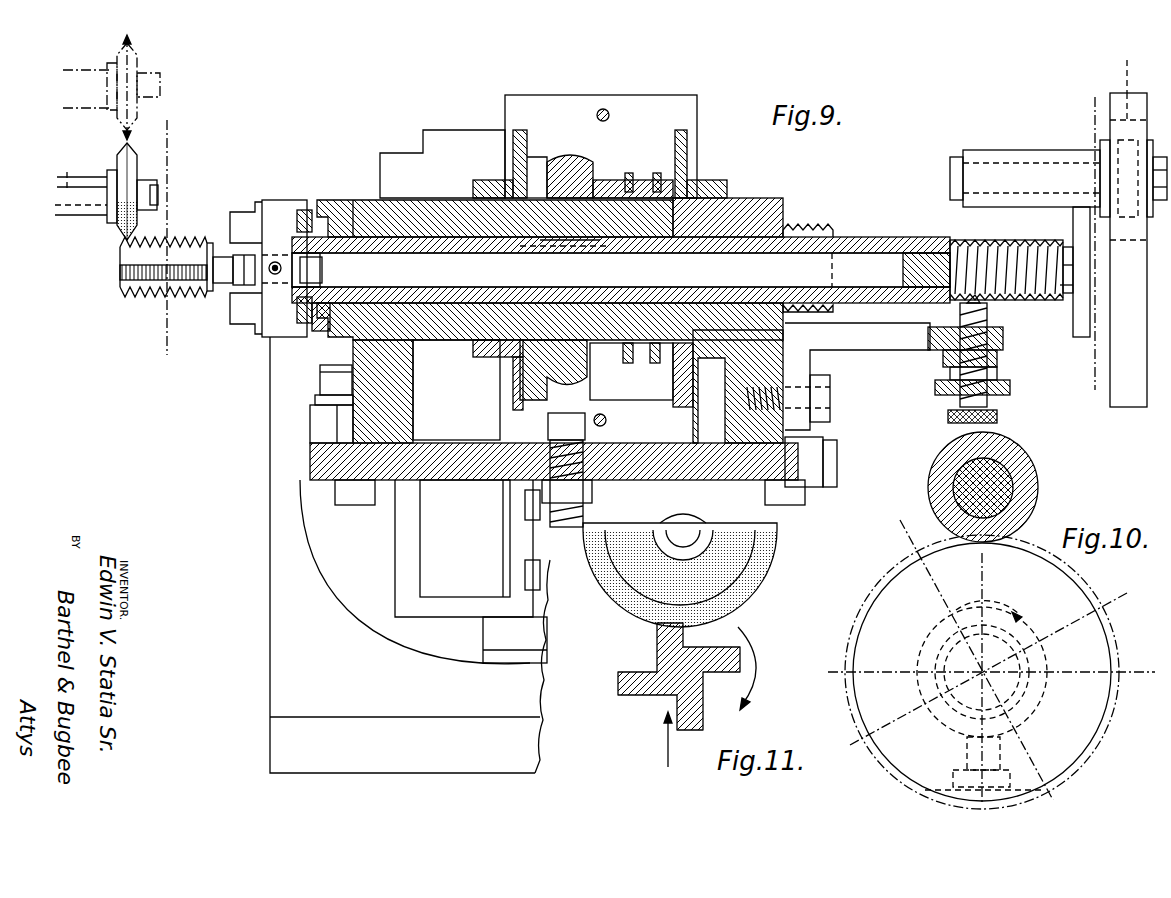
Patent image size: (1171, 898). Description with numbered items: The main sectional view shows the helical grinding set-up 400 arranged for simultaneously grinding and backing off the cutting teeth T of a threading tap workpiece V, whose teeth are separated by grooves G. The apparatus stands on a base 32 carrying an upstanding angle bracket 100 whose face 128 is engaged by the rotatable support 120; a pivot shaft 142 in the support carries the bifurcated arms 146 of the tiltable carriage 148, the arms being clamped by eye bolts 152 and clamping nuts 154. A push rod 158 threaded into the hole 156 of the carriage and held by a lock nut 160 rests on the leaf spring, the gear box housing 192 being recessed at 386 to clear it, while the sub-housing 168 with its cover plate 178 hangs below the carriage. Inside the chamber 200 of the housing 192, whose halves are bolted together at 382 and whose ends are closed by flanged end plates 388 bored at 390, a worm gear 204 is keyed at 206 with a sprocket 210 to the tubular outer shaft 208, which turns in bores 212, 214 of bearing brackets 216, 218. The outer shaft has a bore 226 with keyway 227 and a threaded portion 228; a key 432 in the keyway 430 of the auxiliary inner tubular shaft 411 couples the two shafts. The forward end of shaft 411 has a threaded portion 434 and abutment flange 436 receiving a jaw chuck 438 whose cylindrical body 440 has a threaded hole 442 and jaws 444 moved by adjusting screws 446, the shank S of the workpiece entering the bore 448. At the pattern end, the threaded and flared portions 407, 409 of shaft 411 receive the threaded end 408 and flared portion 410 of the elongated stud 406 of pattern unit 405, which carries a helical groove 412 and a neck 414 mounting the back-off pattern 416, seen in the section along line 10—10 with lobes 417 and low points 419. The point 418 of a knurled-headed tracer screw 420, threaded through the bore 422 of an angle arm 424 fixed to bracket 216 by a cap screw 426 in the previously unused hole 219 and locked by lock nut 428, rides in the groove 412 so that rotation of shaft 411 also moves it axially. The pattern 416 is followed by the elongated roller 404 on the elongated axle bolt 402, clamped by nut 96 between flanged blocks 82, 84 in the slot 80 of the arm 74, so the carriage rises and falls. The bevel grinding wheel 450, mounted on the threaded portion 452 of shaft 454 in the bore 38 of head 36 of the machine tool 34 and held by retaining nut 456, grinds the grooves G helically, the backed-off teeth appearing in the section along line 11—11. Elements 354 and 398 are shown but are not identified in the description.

In FIG. 9, the section line 11 is at (172, 147).
In FIG. 9, the section line 10 is at (1095, 97).
In FIG. 9, the bevel grinding wheel 450 is at (120, 152).
In FIG. 11, the bevel grinding wheel 450 is at (760, 570).
In FIG. 9, the reduced diameter partially threaded portion 452 is at (140, 192).
In FIG. 11, the reduced diameter partially threaded portion 452 is at (700, 522).
In FIG. 9, the retaining nut 456 is at (138, 205).
In FIG. 11, the retaining nut 456 is at (715, 535).
In FIG. 9, the shaft 454 is at (68, 175).
In FIG. 9, the machine tool 34 is at (48, 208).
In FIG. 9, the head 36 is at (58, 224).
In FIG. 9, the bore 38 is at (82, 218).
In FIG. 9, the workpiece V is at (126, 262).
In FIG. 11, the workpiece V is at (675, 663).
In FIG. 9, the cutting teeth T is at (123, 290).
In FIG. 11, the cutting teeth T is at (630, 688).
In FIG. 9, the grooves G is at (150, 300).
In FIG. 11, the grooves G is at (640, 697).
In FIG. 9, the shank S is at (218, 243).
In FIG. 9, the jaws 444 is at (250, 212).
In FIG. 9, the work-holding chuck 438 is at (282, 196).
In FIG. 9, the cylindrical body 440 is at (261, 203).
In FIG. 9, the central threaded hole 442 is at (300, 210).
In FIG. 9, the headless adjusting screws 446 is at (272, 276).
In FIG. 9, the abutment flange 436 is at (320, 332).
In FIG. 9, the threaded portion 434 is at (332, 378).
In FIG. 9, the clamping nuts 154 is at (318, 400).
In FIG. 9, the bifurcated arms 146 is at (320, 420).
In FIG. 9, the tubular outer shaft 208 is at (377, 198).
In FIG. 9, the bore 214 is at (445, 235).
In FIG. 9, the keyway 227 is at (412, 235).
In FIG. 9, the bore 448 is at (388, 252).
In FIG. 9, the bore 226 is at (735, 300).
In FIG. 9, the central keyway 430 is at (538, 250).
In FIG. 9, the key 432 is at (588, 250).
In FIG. 9, the bore 212 is at (730, 198).
In FIG. 9, the bearing bracket 216 is at (770, 206).
In FIG. 9, the threaded portion 228 is at (806, 222).
In FIG. 9, the auxiliary inner tubular shaft 411 is at (858, 238).
In FIG. 9, the threaded end 408 is at (903, 270).
In FIG. 9, the threaded portion 407 is at (905, 302).
In FIG. 9, the flared portion 409 is at (938, 303).
In FIG. 9, the flared portion 410 is at (948, 243).
In FIG. 9, the gear box housing 192 is at (690, 105).
In FIG. 9, the helical grinding set-up 400 is at (453, 166).
In FIG. 9, the flanged end plates 388 is at (513, 150).
In FIG. 9, the bores 390 is at (480, 196).
In FIG. 9, the chamber 200 is at (538, 150).
In FIG. 9, the worm gear 204 is at (578, 158).
In FIG. 9, the sprocket 210 is at (632, 173).
In FIG. 9, the key 206 is at (633, 188).
In FIG. 9, the dowel 354 is at (660, 172).
In FIG. 9, the cover plate 398 is at (687, 142).
In FIG. 9, the bolts 382 is at (603, 109).
In FIG. 9, the bearing bracket 218 is at (416, 344).
In FIG. 9, the recess 386 is at (583, 400).
In FIG. 9, the horizontal threaded hole 219 is at (742, 405).
In FIG. 9, the threaded vertical hole 156 is at (588, 442).
In FIG. 9, the lock nut 160 is at (592, 491).
In FIG. 9, the push rod 158 is at (586, 509).
In FIG. 9, the tiltable carriage 148 is at (326, 462).
In FIG. 9, the pivot shaft 142 is at (830, 478).
In FIG. 9, the eye bolts 152 is at (358, 506).
In FIG. 9, the rotatable support 120 is at (432, 614).
In FIG. 9, the sub-housing 168 is at (434, 552).
In FIG. 9, the cover plate 178 is at (520, 598).
In FIG. 9, the face 128 is at (360, 594).
In FIG. 9, the angle bracket 100 is at (283, 665).
In FIG. 9, the base 32 is at (283, 738).
In FIG. 9, the angle arm 424 is at (883, 350).
In FIG. 10, the angle arm 424 is at (925, 790).
In FIG. 9, the cap screw 426 is at (830, 395).
In FIG. 9, the threaded bore 422 is at (1000, 340).
In FIG. 9, the point 418 is at (986, 306).
In FIG. 10, the point 418 is at (950, 735).
In FIG. 9, the lock nut 428 is at (936, 392).
In FIG. 9, the tracer screw 420 is at (990, 416).
In FIG. 10, the tracer screw 420 is at (955, 770).
In FIG. 9, the helical groove 412 is at (990, 240).
In FIG. 10, the helical groove 412 is at (922, 642).
In FIG. 9, the elongated stud 406 is at (1062, 246).
In FIG. 9, the pattern unit 405 is at (1074, 332).
In FIG. 9, the neck 414 is at (1038, 298).
In FIG. 9, the back-off pattern 416 is at (1094, 392).
In FIG. 10, the back-off pattern 416 is at (1068, 586).
In FIG. 9, the elongated pattern follower roller 404 is at (1004, 150).
In FIG. 10, the elongated pattern follower roller 404 is at (1038, 484).
In FIG. 9, the elongated headed axle bolt 402 is at (950, 168).
In FIG. 10, the elongated headed axle bolt 402 is at (965, 488).
In FIG. 9, the flanged block 84 is at (1100, 140).
In FIG. 9, the arm 74 is at (1127, 408).
In FIG. 9, the vertical slot 80 is at (1124, 69).
In FIG. 9, the flanged block 82 is at (1150, 140).
In FIG. 9, the nut 96 is at (1158, 200).
In FIG. 10, the lobes 417 is at (982, 560).
In FIG. 10, the low points 419 is at (900, 525).